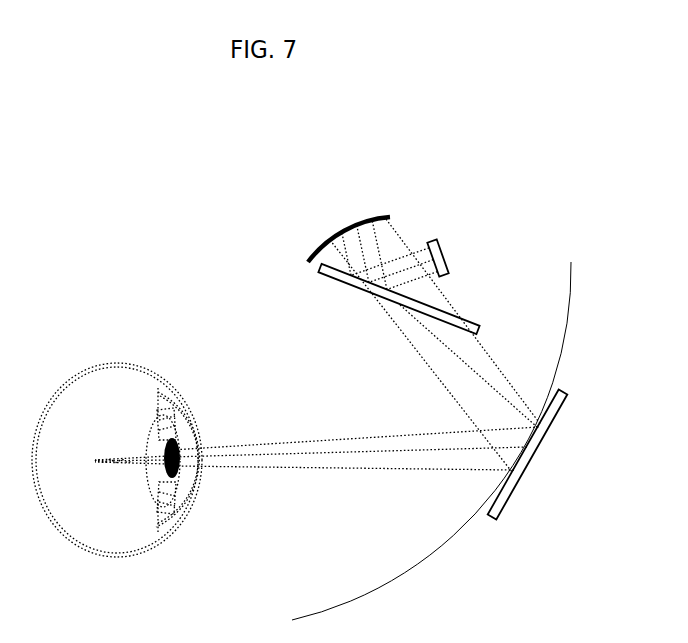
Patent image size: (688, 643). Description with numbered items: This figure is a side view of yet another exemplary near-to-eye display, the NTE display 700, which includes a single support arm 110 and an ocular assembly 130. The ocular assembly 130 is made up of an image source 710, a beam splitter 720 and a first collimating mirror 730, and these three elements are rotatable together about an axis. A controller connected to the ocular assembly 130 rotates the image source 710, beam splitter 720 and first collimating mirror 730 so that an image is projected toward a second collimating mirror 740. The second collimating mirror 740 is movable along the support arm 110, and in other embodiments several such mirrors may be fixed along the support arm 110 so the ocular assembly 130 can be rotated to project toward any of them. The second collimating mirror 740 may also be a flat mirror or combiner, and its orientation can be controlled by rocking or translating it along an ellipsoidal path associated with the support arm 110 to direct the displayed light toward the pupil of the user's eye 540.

The NTE display 700 is at (470, 126).
The support arm 110 is at (561, 352).
The ocular assembly 130 is at (272, 198).
The image source 710 is at (448, 266).
The beam splitter 720 is at (387, 302).
The first collimating mirror 730 is at (389, 216).
The second collimating mirror 740 is at (542, 442).
The user's eye 540 is at (137, 557).